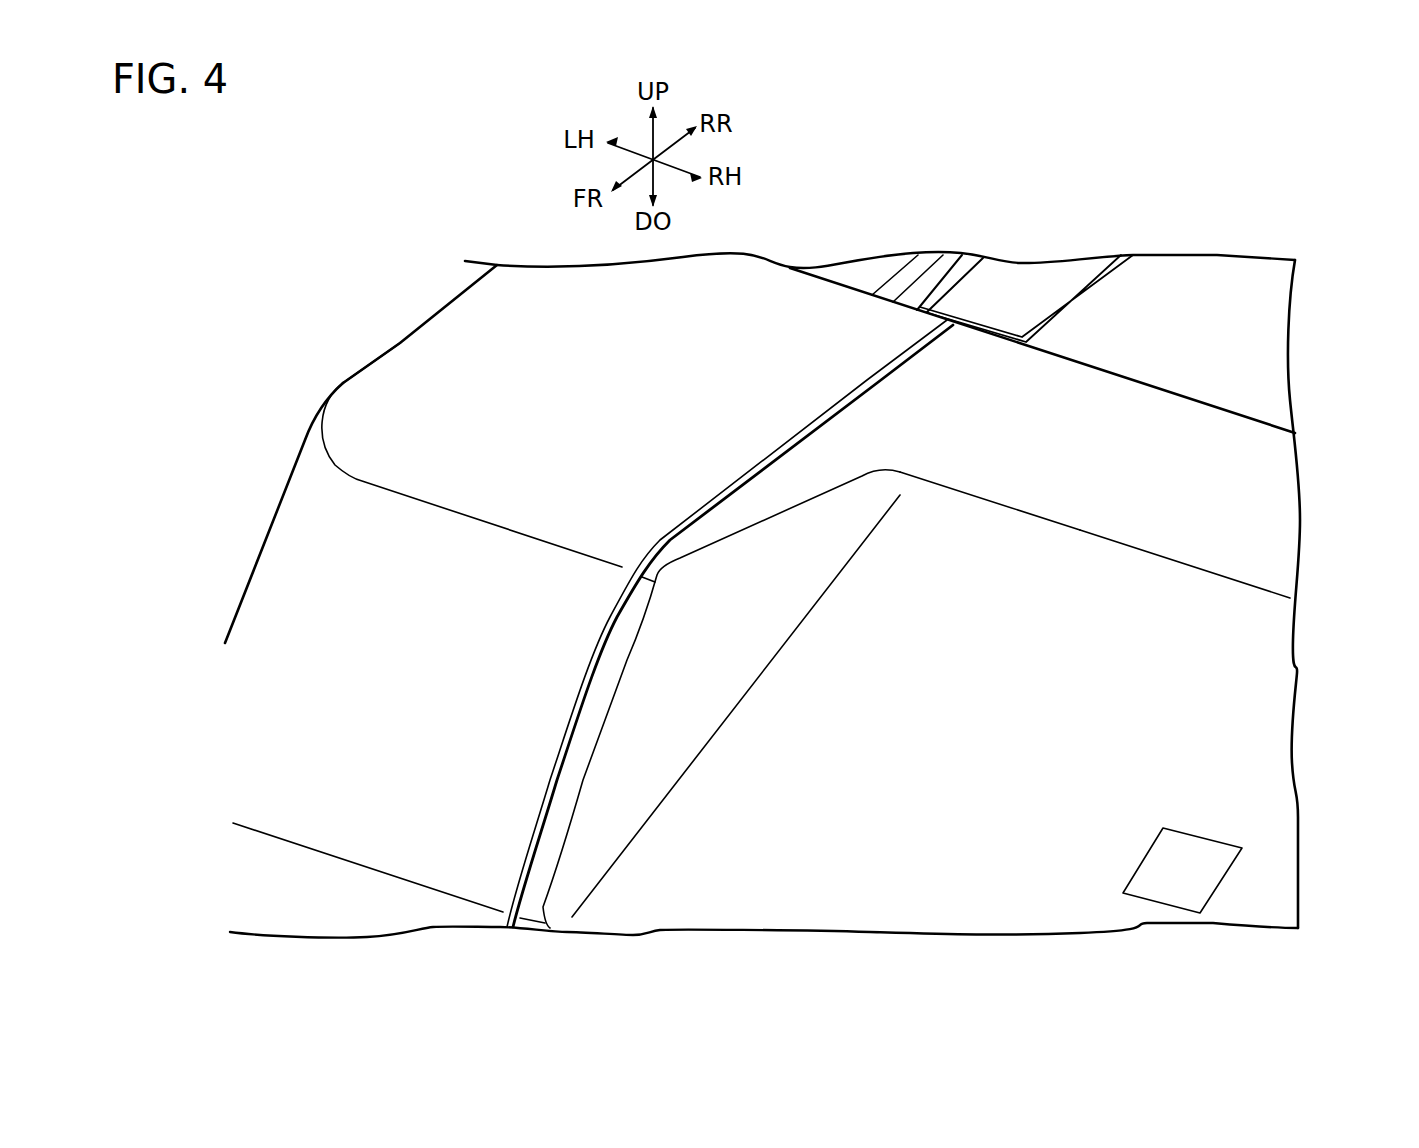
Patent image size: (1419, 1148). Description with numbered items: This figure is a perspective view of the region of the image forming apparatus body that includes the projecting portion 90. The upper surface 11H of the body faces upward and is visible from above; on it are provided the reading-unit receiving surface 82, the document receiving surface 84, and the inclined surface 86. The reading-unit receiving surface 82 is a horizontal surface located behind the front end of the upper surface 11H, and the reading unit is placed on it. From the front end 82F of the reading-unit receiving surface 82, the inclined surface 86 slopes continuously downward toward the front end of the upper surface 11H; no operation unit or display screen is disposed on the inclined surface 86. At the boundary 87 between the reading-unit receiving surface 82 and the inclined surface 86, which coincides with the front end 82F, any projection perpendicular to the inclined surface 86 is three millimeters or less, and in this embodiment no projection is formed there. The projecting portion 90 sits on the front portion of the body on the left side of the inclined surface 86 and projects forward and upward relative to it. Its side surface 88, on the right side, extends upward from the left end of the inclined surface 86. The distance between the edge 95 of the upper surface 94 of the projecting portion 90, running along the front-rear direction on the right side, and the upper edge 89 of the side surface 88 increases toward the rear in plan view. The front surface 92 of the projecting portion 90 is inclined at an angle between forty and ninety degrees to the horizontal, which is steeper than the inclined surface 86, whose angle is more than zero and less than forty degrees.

The upper surface 11H is at (1282, 500).
The reading-unit receiving surface 82 is at (1240, 420).
The front end of the reading-unit receiving surface 82F is at (1113, 543).
The document receiving surface 84 is at (1255, 327).
The inclined surface 86 is at (1268, 677).
The boundary 87 is at (1035, 518).
The side surface 88 is at (765, 645).
The upper edge of the side surface 89 is at (853, 483).
The projecting portion 90 is at (460, 284).
The front surface of the projecting portion 92 is at (285, 582).
The upper surface of the projecting portion 94 is at (413, 358).
The edge of the upper surface of the projecting portion 95 is at (757, 468).